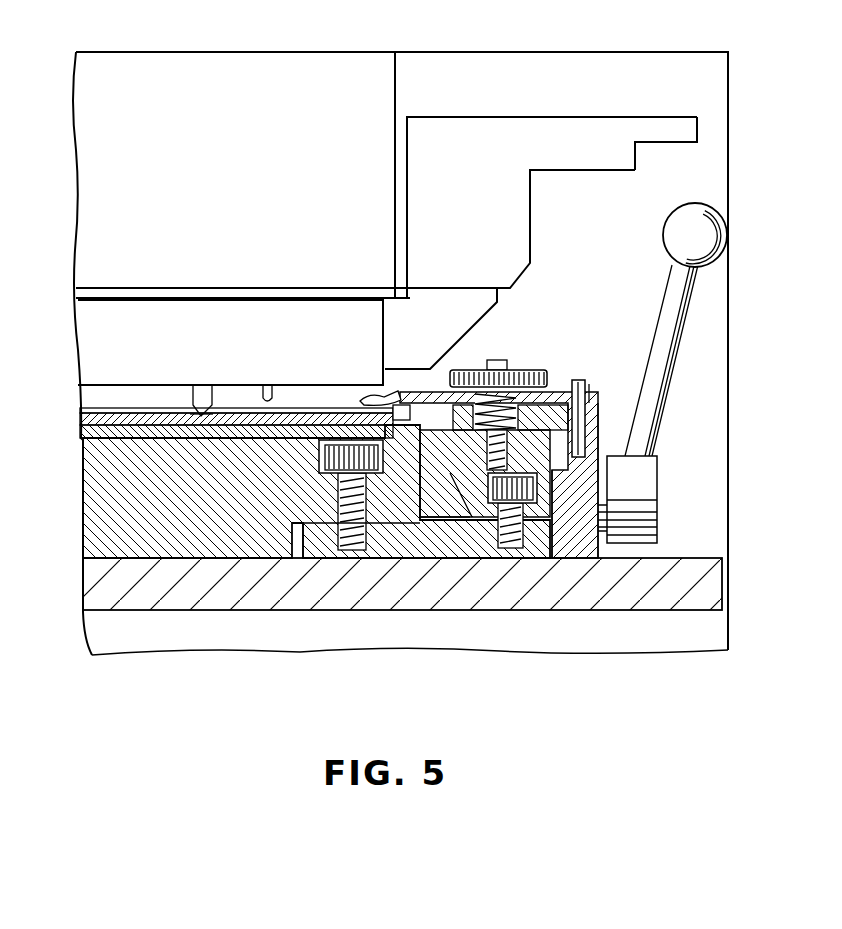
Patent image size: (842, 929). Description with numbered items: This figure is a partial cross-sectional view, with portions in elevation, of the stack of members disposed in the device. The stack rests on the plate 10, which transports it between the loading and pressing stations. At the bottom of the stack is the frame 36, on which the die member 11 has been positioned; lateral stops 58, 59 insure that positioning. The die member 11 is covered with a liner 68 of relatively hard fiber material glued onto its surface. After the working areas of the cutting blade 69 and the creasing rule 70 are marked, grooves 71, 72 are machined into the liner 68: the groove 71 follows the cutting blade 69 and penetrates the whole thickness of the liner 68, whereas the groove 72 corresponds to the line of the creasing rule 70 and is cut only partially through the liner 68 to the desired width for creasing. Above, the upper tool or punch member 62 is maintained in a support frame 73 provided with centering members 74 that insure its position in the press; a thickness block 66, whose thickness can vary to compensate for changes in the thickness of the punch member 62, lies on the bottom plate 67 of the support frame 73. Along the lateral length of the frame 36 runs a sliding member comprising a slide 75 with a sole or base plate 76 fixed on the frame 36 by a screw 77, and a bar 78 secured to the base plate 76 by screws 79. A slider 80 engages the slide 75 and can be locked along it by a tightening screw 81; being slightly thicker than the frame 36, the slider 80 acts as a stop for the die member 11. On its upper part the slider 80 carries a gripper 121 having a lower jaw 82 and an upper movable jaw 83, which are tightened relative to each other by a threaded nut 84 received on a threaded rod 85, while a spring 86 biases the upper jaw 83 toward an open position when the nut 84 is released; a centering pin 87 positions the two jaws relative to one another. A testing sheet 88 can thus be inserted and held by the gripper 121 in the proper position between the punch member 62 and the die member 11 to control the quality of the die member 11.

The plate 10 is at (103, 588).
The die member 11 is at (217, 454).
The frame 36 is at (96, 504).
The lateral stop 58 is at (665, 497).
The lateral stop 59 is at (676, 496).
The upper tool or punch member 62 is at (98, 348).
The thickness block 66 is at (257, 72).
The bottom plate 67 is at (84, 297).
The liner 68 is at (87, 428).
The cutting blade 69 is at (196, 416).
The creasing rule 70 is at (276, 397).
The groove 71 is at (205, 408).
The groove 72 is at (265, 412).
The support frame 73 is at (486, 114).
The centering member 74 is at (660, 120).
The slide 75 is at (458, 540).
The sole or base plate 76 is at (433, 548).
The screw 77 is at (352, 550).
The bar 78 is at (548, 540).
The screw 79 is at (515, 548).
The slider 80 is at (588, 540).
The tightening screw 81 is at (666, 216).
The lower jaw 82 is at (597, 430).
The upper movable jaw 83 is at (566, 392).
The threaded nut 84 is at (540, 371).
The threaded rod 85 is at (488, 447).
The spring 86 is at (516, 439).
The centering pin 87 is at (591, 386).
The testing sheet 88 is at (114, 410).
The gripper 121 is at (432, 386).